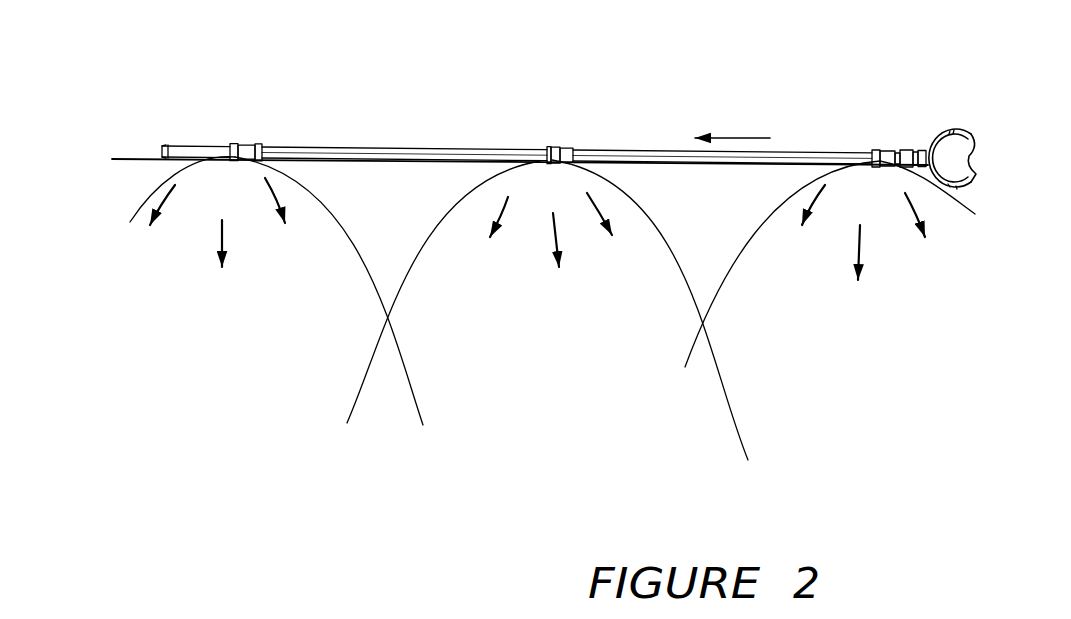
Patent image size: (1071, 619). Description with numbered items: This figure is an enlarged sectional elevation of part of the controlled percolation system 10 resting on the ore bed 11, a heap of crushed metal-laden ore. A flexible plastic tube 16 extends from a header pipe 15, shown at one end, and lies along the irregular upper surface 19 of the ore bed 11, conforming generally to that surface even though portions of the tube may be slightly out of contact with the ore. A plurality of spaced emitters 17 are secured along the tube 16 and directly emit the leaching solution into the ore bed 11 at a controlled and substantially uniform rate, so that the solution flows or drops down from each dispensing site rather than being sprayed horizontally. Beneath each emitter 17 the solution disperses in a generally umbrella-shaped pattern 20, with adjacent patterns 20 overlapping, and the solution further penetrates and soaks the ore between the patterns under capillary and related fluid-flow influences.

The controlled percolation system 10 is at (493, 93).
The ore bed 11 is at (282, 468).
The header pipe 15 is at (943, 128).
The tube 16 is at (432, 149).
The emitter 17 is at (245, 142).
The upper surface 19 is at (145, 158).
The umbrella-shaped pattern 20 is at (447, 212).